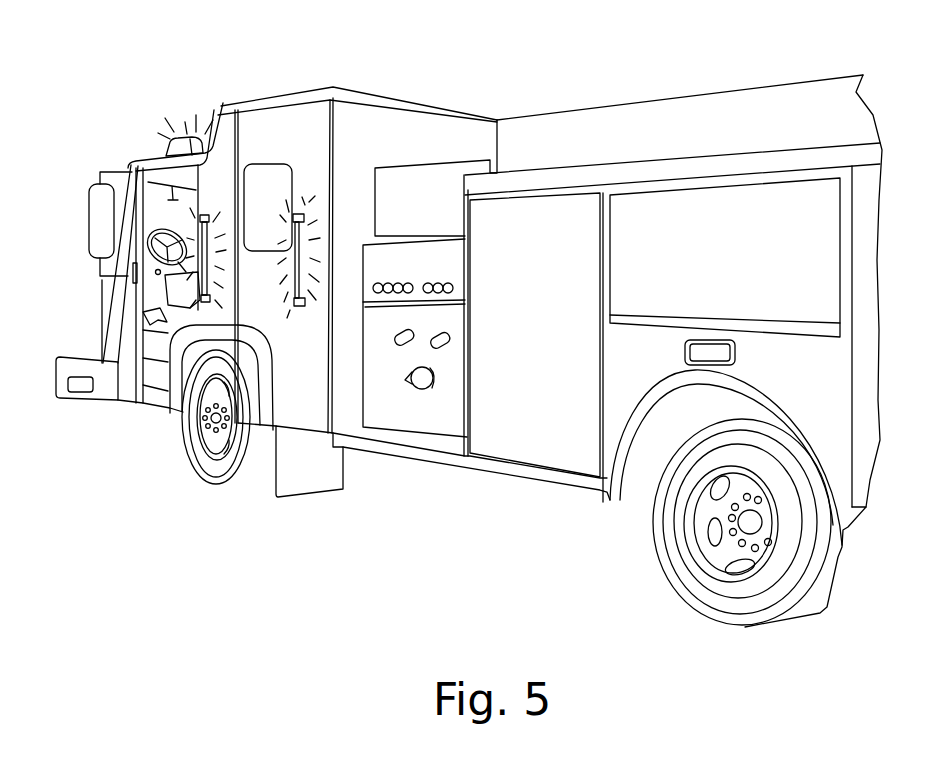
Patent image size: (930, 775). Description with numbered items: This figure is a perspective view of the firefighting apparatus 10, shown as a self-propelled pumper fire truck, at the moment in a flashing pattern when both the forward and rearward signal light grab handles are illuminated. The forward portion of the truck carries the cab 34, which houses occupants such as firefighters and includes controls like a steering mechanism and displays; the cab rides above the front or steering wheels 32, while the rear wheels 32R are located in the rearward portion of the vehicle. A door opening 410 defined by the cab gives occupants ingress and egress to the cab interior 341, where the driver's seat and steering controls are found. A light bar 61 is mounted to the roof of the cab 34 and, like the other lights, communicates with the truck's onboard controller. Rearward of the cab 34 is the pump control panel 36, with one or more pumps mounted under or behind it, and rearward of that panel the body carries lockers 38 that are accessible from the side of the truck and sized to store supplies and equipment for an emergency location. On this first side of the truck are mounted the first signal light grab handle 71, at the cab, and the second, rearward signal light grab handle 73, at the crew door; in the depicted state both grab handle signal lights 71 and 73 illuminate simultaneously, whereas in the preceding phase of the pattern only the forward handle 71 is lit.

The firefighting apparatus 10 is at (182, 88).
The front wheels 32 is at (186, 445).
The rear wheels 32R is at (684, 580).
The cab 34 is at (222, 138).
The cab interior 341 is at (170, 233).
The pump control panel 36 is at (437, 378).
The lockers 38 is at (863, 250).
The light bar 61 is at (166, 152).
The first signal light grab handle 71 is at (207, 231).
The second signal light grab handle 73 is at (298, 291).
The opening 410 is at (157, 274).